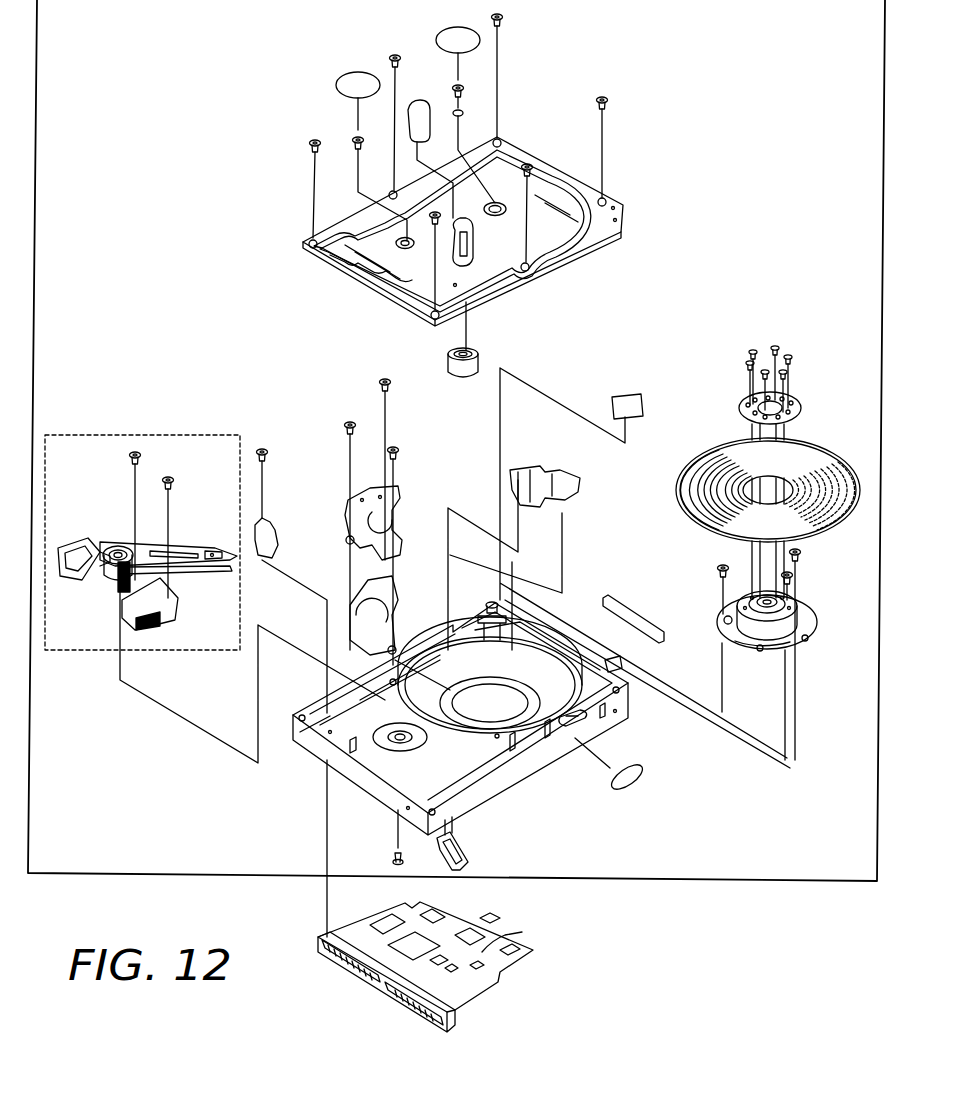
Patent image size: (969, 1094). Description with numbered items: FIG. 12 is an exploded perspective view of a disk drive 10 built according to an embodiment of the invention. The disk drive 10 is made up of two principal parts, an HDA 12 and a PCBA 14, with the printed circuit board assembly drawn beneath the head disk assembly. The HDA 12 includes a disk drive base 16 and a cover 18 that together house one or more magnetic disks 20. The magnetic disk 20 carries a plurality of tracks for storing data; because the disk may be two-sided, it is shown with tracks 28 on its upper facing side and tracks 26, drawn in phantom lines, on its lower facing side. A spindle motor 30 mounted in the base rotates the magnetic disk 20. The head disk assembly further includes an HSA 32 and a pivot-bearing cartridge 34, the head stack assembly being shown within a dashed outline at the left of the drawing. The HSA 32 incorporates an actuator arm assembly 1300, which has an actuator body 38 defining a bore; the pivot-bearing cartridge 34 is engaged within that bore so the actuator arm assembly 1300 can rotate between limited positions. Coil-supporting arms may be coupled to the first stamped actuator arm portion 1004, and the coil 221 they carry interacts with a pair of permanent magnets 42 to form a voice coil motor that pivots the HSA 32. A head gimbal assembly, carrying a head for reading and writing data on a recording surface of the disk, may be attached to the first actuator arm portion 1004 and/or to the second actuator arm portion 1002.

The disk drive 10 is at (712, 905).
The HDA 12 is at (611, 879).
The PCBA 14 is at (482, 990).
The disk drive base 16 is at (512, 782).
The cover 18 is at (587, 232).
The magnetic disk 20 is at (750, 508).
The tracks 26 is at (835, 528).
The tracks 28 is at (695, 488).
The spindle motor 30 is at (708, 597).
The HSA 32 is at (143, 521).
The pivot-bearing cartridge 34 is at (118, 545).
The actuator body 38 is at (110, 548).
The permanent magnets 42 is at (348, 513).
The voice coil 221 is at (88, 583).
The second actuator arm portion 1002 is at (207, 540).
The first stamped actuator arm portion 1004 is at (182, 568).
The actuator arm assembly 1300 is at (160, 545).